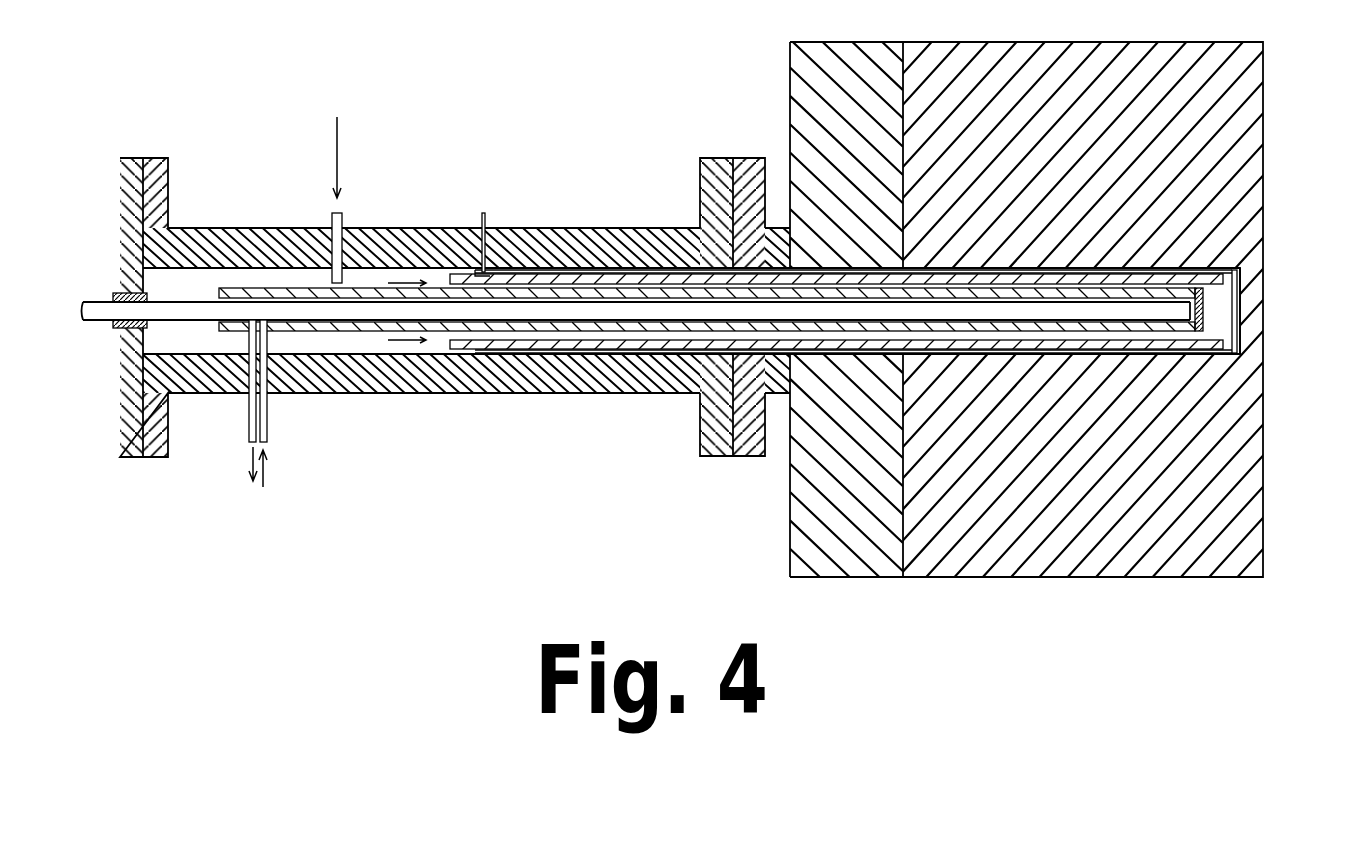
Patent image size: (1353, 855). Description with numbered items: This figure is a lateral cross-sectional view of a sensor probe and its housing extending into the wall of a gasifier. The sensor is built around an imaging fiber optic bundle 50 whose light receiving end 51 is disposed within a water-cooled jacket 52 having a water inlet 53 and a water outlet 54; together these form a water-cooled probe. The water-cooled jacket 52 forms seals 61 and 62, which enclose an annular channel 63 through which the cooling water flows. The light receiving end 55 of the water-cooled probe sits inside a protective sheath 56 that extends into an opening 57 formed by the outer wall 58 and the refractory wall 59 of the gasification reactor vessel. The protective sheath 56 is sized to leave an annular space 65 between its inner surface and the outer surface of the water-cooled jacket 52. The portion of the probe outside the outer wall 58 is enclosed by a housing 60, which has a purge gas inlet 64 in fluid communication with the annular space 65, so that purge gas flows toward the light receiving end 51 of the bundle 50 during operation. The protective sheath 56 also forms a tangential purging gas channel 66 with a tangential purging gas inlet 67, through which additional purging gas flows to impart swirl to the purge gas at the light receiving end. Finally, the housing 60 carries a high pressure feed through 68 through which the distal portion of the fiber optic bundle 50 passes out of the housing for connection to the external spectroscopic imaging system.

The imaging fiber optic bundle 50 is at (592, 308).
The light receiving end 51 is at (1162, 317).
The water-cooled jacket 52 is at (555, 347).
The water inlet 53 is at (268, 407).
The water outlet 54 is at (250, 417).
The light receiving end of the water-cooled probe 55 is at (1238, 343).
The protective sheath 56 is at (1177, 268).
The opening 57 is at (787, 262).
The outer wall 58 is at (790, 455).
The refractory wall 59 is at (1007, 577).
The housing 60 is at (650, 227).
The seal 61 is at (215, 227).
The seal 62 is at (1190, 298).
The annular channel 63 is at (413, 285).
The purge gas inlet 64 is at (332, 213).
The annular space 65 is at (647, 340).
The tangential purging gas channel 66 is at (553, 268).
The tangential purging gas inlet 67 is at (482, 213).
The high pressure feed through 68 is at (115, 297).